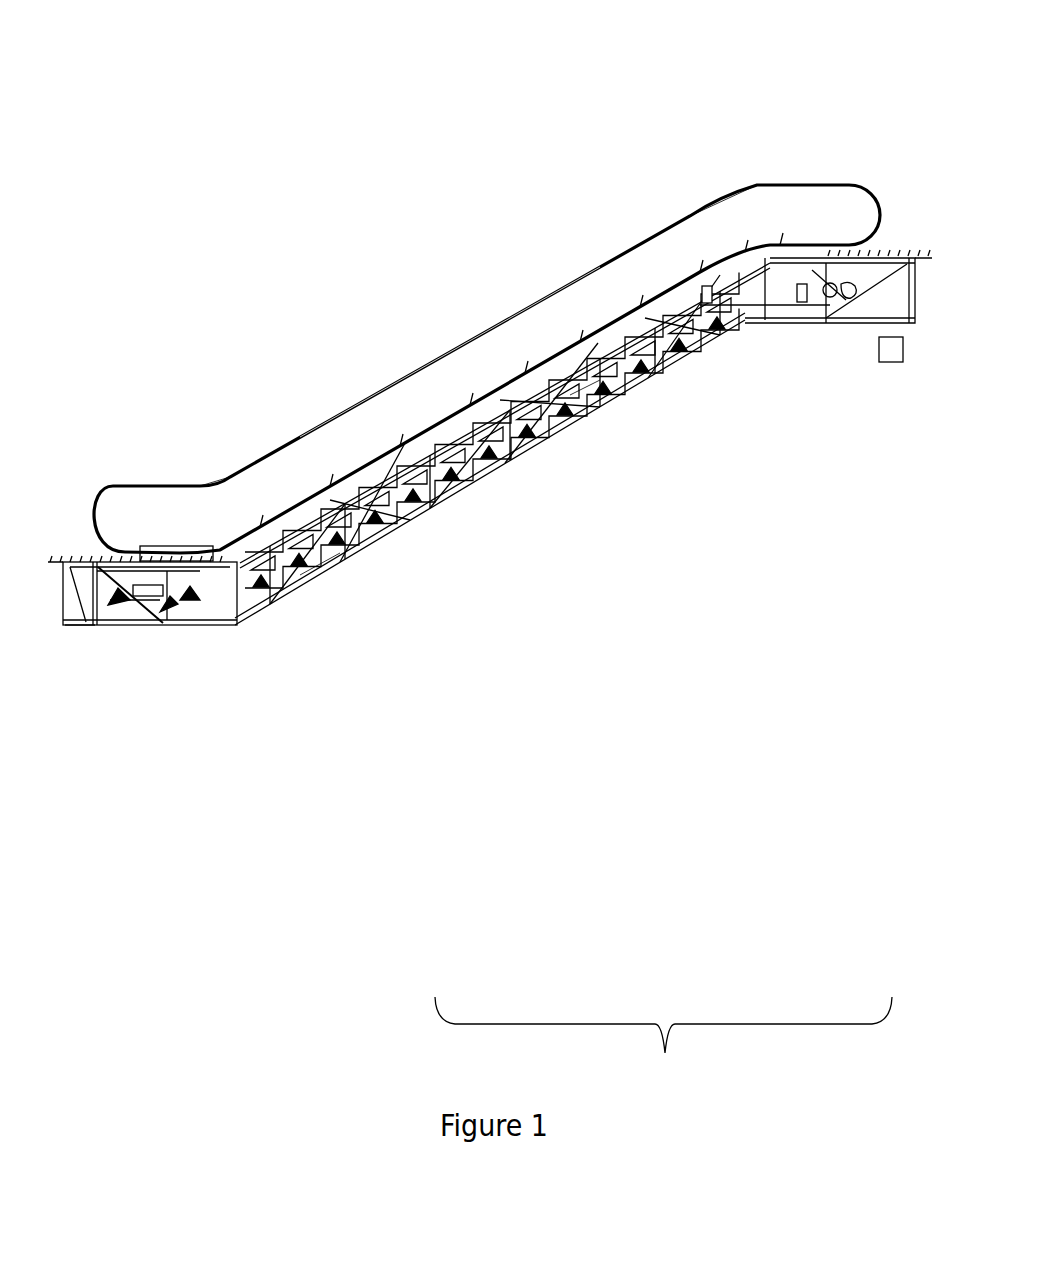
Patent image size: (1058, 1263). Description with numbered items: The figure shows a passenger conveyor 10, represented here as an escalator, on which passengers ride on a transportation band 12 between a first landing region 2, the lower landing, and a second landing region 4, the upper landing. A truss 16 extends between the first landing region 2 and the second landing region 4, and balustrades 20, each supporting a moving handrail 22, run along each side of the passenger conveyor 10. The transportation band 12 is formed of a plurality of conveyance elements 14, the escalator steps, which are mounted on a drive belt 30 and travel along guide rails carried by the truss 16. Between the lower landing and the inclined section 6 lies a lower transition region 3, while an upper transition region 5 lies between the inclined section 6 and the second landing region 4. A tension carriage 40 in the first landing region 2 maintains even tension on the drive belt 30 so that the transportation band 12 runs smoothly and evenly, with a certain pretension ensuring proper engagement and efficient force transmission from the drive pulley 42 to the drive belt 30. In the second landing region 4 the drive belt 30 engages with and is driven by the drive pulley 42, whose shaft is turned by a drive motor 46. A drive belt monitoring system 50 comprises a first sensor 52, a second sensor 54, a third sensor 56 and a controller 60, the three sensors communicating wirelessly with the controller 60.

The first landing region 2 is at (77, 506).
The lower transition region 3 is at (221, 492).
The second landing region 4 is at (848, 157).
The upper transition region 5 is at (703, 240).
The inclined section 6 is at (497, 278).
The passenger conveyor 10 is at (500, 546).
The transportation band 12 is at (414, 512).
The conveyance elements 14 is at (320, 562).
The truss 16 is at (81, 634).
The balustrades 20 is at (394, 412).
The moving handrail 22 is at (423, 358).
The drive belt 30 is at (582, 390).
The tension carriage 40 is at (138, 616).
The drive pulley 42 is at (848, 276).
The drive motor 46 is at (822, 272).
The drive belt monitoring system 50 is at (663, 1037).
The first sensor 52 is at (160, 612).
The second sensor 54 is at (703, 303).
The third sensor 56 is at (802, 302).
The controller 60 is at (887, 370).